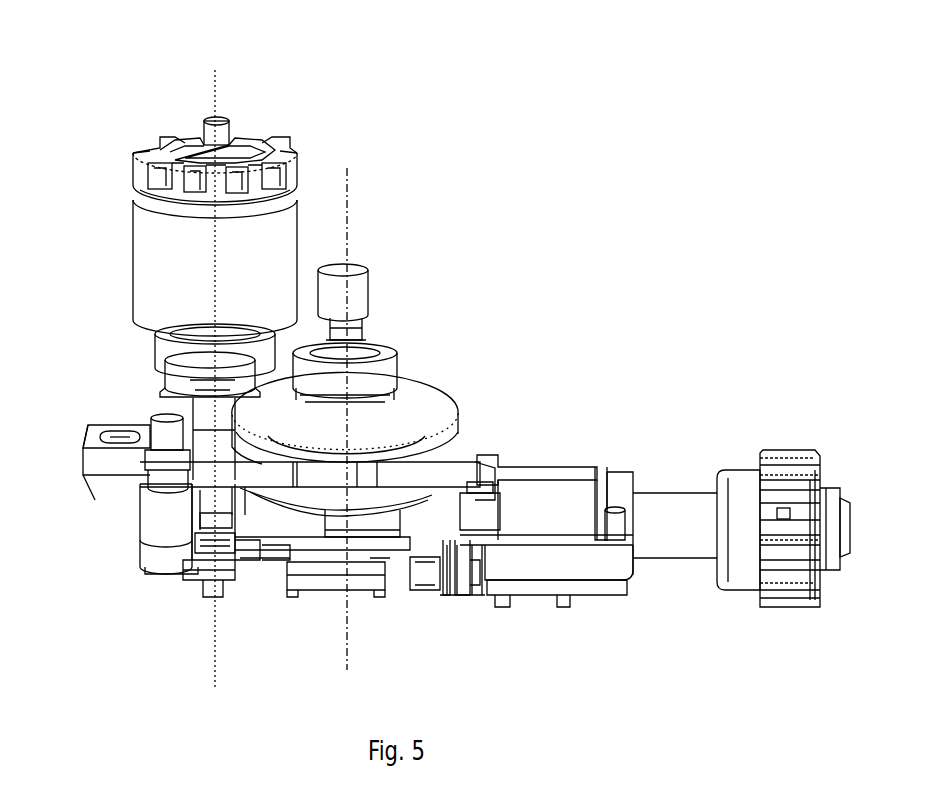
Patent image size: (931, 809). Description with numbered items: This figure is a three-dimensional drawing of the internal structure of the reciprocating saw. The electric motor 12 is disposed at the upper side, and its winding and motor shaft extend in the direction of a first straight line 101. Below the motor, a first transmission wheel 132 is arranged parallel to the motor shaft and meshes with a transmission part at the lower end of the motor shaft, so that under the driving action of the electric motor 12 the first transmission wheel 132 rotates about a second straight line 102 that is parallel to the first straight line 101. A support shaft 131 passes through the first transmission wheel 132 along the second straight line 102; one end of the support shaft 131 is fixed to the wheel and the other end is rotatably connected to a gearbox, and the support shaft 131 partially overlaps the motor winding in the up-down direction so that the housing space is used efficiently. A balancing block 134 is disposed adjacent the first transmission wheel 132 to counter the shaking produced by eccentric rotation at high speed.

The electric motor 12 is at (300, 200).
The first straight line 101 is at (215, 88).
The second straight line 102 is at (372, 203).
The support shaft 131 is at (366, 330).
The first transmission wheel 132 is at (462, 410).
The balancing block 134 is at (78, 478).